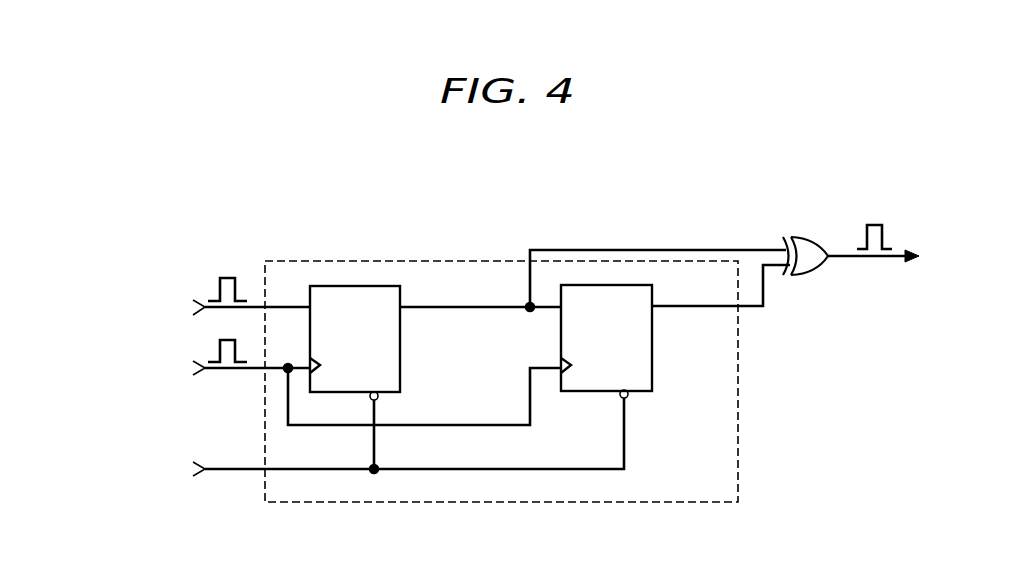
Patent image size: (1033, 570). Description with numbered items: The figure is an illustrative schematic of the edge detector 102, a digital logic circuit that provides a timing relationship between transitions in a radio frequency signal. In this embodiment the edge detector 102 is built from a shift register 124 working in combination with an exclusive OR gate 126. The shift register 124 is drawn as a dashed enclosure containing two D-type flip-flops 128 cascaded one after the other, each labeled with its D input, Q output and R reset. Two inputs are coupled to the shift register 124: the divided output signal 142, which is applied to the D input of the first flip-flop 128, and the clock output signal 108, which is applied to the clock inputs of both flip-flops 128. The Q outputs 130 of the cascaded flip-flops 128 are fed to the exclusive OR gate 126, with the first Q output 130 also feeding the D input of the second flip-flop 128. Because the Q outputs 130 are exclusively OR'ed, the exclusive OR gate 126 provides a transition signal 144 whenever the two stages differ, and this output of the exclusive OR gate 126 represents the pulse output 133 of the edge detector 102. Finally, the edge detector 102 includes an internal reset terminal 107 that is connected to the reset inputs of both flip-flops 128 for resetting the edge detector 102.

The edge detector 102 is at (523, 148).
The internal reset terminal 107 is at (217, 473).
The clock output signal 108 is at (217, 342).
The shift register 124 is at (432, 261).
The exclusive OR gate 126 is at (812, 235).
The flip-flop 128 is at (402, 368).
The Q output 130 is at (448, 306).
The pulse output 133 is at (878, 260).
The divided output signal 142 is at (224, 278).
The transition signal 144 is at (878, 225).